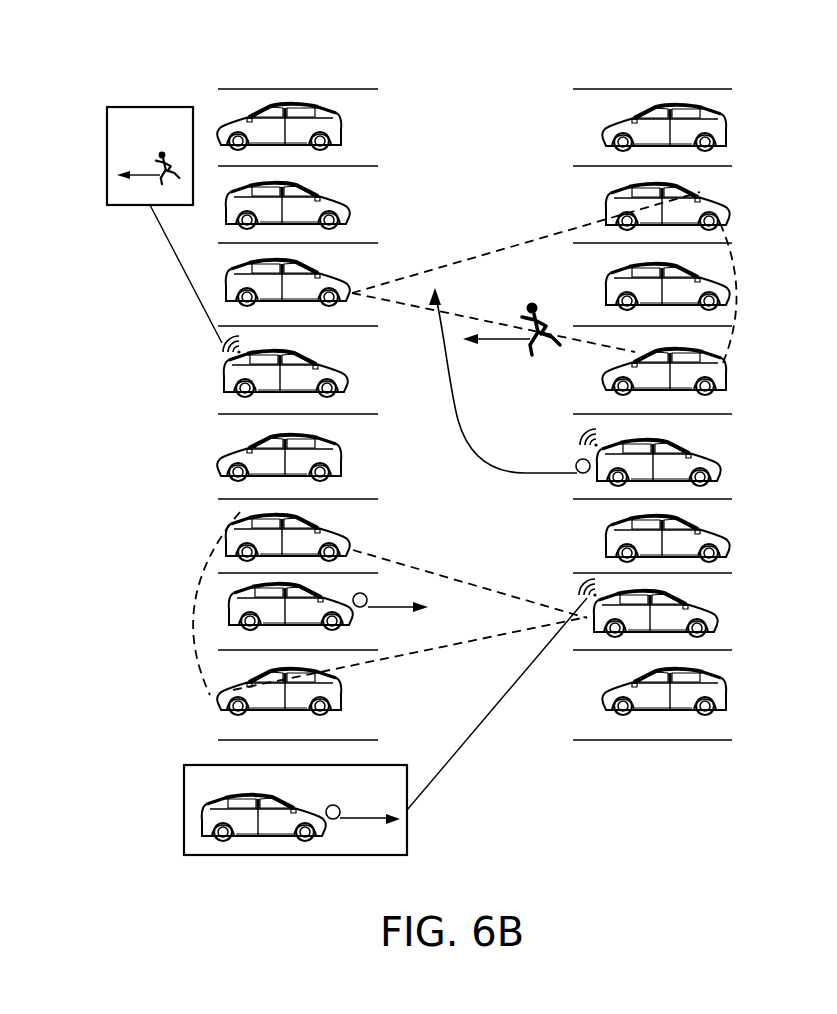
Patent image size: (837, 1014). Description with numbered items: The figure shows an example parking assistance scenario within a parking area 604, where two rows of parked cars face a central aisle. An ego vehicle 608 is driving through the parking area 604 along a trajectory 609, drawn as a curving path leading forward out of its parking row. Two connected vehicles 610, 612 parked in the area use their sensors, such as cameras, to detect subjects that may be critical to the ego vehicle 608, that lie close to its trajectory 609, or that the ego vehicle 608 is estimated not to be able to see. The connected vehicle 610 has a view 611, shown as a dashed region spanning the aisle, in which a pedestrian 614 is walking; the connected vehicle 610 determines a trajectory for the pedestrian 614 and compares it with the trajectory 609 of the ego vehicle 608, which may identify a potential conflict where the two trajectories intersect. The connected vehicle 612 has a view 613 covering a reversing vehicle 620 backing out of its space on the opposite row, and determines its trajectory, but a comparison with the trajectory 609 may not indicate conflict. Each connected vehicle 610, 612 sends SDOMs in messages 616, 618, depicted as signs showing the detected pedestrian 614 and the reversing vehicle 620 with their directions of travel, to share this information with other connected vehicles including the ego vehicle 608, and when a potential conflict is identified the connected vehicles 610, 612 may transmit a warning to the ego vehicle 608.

The parking area 604 is at (120, 303).
The ego vehicle 608 is at (727, 473).
The trajectory 609 is at (528, 474).
The connected vehicle 610 is at (220, 377).
The view 611 is at (740, 268).
The connected vehicle 612 is at (727, 620).
The view 613 is at (210, 697).
The pedestrian 614 is at (530, 300).
The message 616 is at (143, 107).
The message 618 is at (184, 802).
The vehicle 620 is at (225, 618).